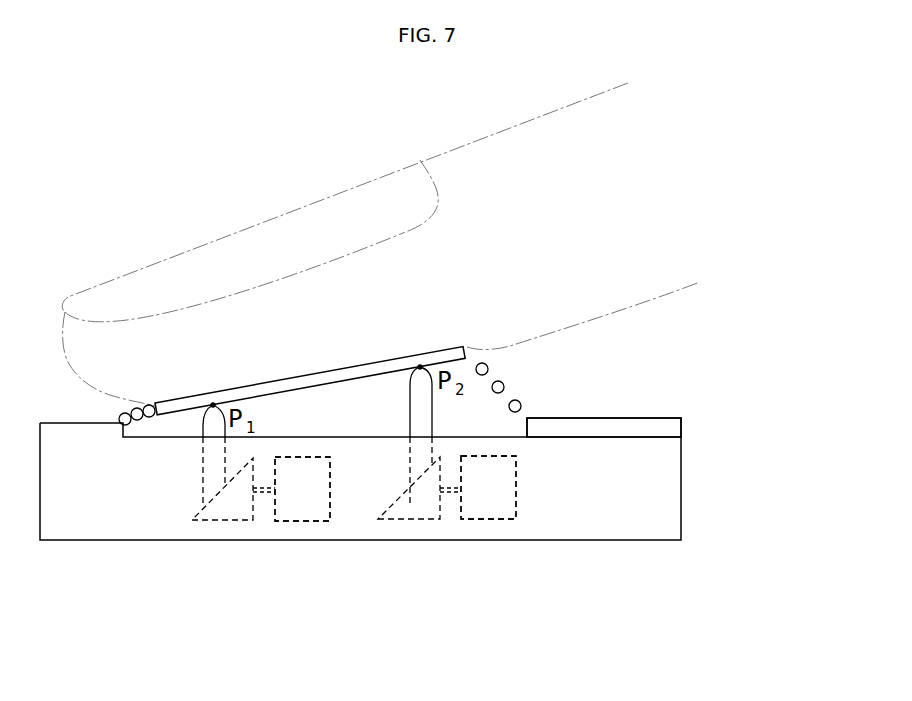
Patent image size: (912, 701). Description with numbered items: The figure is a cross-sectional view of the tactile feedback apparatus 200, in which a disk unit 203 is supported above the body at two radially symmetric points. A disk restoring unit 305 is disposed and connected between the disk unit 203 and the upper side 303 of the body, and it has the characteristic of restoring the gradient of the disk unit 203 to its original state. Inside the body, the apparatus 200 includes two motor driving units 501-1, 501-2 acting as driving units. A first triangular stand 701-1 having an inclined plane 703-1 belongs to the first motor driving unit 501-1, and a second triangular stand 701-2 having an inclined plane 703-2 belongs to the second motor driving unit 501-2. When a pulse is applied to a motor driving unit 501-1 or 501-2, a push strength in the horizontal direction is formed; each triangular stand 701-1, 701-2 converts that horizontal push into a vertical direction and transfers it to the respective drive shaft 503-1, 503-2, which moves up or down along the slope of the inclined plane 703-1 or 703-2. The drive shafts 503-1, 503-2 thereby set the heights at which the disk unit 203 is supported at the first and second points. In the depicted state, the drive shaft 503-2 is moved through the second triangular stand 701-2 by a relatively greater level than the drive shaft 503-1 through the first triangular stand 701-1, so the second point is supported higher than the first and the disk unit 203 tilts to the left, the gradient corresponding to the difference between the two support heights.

The tactile feedback apparatus 200 is at (690, 338).
The disk unit 203 is at (307, 385).
The upper side of a body 303 is at (642, 425).
The disk restoring unit 305 is at (504, 387).
The drive shaft 503-1 is at (213, 405).
The drive shaft 503-2 is at (420, 367).
The inclined plane 703-1 is at (222, 492).
The inclined plane 703-2 is at (405, 492).
The triangular stand 701-1 is at (246, 525).
The triangular stand 701-2 is at (410, 523).
The motor driving unit 501-1 is at (302, 523).
The motor driving unit 501-2 is at (487, 523).